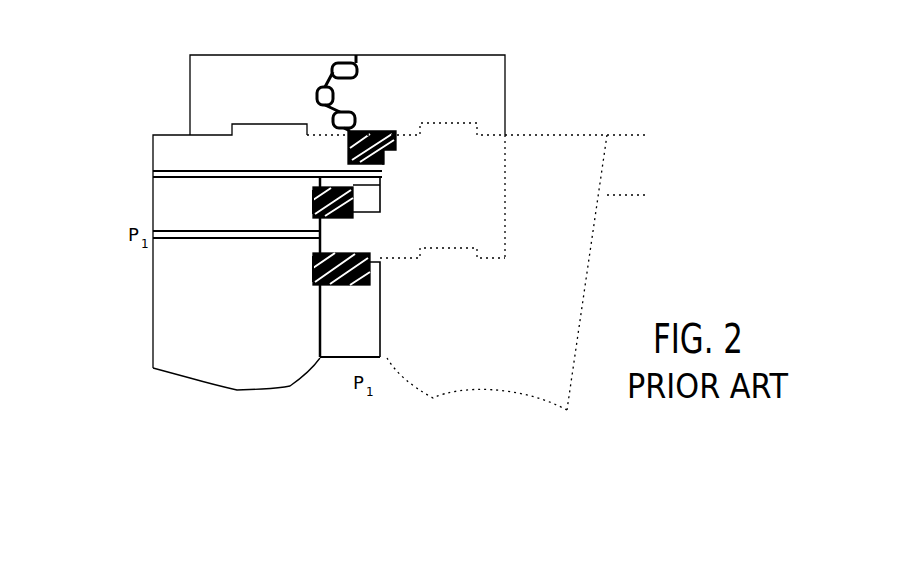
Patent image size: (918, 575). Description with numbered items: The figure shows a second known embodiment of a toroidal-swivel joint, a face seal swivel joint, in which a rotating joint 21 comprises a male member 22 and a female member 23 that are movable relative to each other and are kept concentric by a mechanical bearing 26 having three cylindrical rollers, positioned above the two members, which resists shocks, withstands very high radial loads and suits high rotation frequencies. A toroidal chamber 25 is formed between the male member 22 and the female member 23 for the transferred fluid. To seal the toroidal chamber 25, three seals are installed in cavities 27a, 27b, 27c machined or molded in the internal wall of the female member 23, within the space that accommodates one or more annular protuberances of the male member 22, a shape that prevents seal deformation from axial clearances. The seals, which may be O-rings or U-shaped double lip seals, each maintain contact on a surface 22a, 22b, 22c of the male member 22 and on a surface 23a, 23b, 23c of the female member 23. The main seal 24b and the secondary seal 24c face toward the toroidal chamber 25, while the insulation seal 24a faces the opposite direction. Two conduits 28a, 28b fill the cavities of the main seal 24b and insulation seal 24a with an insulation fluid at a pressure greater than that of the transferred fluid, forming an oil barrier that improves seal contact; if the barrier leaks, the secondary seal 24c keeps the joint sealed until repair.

The rotating joint 21 is at (142, 63).
The male member 22 is at (513, 252).
The contact surface of the male member 22a is at (380, 267).
The contact surface of the male member 22b is at (370, 219).
The contact surface of the male member 22c is at (372, 119).
The female member 23 is at (187, 358).
The contact surface of the female member 23a is at (333, 297).
The contact surface of the female member 23b is at (326, 178).
The contact surface of the female member 23c is at (392, 167).
The insulation seal 24a is at (385, 297).
The main seal 24b is at (313, 202).
The secondary seal 24c is at (401, 148).
The toroidal chamber 25 is at (407, 401).
The mechanical bearing 26 is at (468, 94).
The cavity 27a is at (308, 275).
The cavity 27b is at (305, 192).
The cavity 27c is at (395, 126).
The conduit 28a is at (171, 252).
The conduit 28b is at (180, 162).